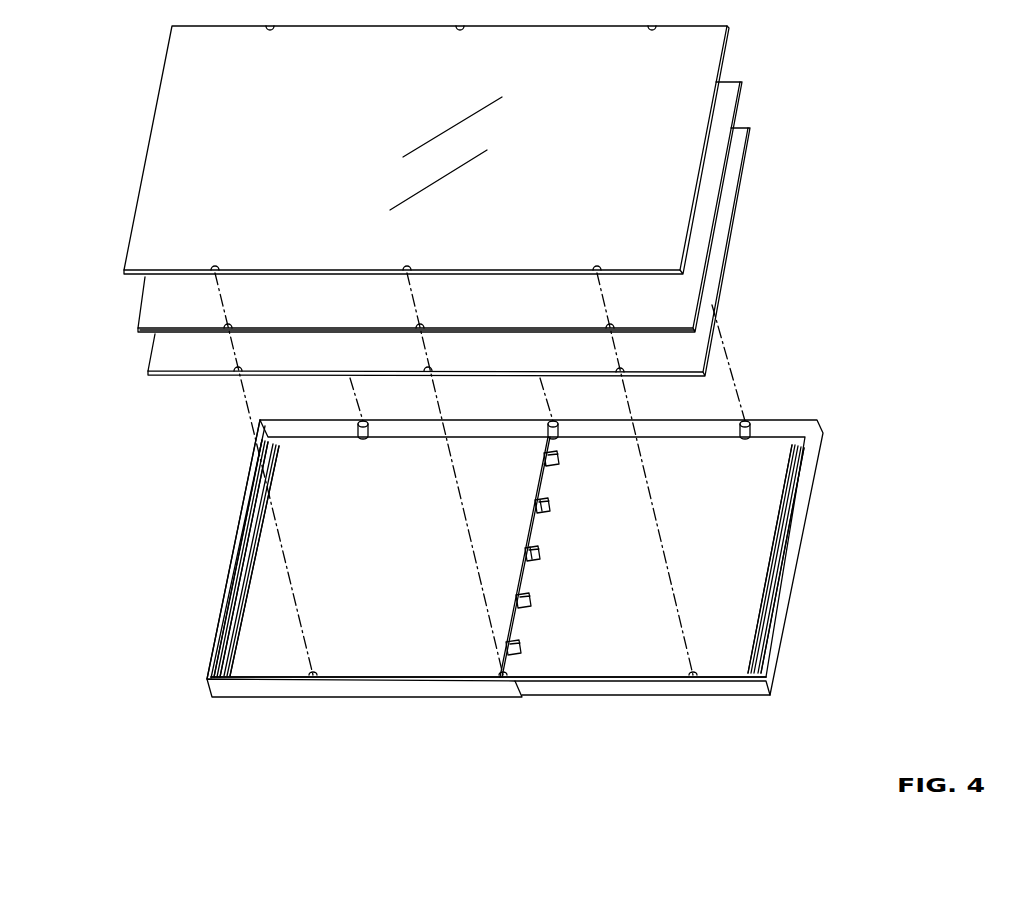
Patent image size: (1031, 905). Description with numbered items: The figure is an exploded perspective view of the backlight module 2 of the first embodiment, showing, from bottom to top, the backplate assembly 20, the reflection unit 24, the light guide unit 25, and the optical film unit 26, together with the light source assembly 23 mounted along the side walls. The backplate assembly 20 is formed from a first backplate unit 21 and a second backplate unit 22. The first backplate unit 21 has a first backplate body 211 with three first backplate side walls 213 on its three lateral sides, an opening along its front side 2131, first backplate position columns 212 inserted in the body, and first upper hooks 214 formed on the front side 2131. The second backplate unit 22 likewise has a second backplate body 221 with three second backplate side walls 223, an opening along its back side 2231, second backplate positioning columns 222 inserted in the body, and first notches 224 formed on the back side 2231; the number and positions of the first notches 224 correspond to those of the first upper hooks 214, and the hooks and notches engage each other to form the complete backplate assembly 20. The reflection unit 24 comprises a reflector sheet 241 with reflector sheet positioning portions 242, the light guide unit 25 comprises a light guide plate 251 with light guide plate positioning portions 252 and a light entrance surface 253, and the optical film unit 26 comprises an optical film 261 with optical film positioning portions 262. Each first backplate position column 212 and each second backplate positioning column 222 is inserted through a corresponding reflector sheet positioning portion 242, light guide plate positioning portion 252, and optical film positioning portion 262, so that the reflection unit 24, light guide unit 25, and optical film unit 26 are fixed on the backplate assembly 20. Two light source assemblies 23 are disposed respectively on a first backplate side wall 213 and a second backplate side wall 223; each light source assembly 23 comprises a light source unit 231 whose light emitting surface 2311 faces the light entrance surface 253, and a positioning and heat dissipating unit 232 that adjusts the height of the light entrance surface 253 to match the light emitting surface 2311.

The backlight module 2 is at (824, 744).
The backplate assembly 20 is at (515, 589).
The first backplate unit 21 is at (383, 578).
The first backplate body 211 is at (425, 663).
The first backplate position columns 212 is at (366, 421).
The first backplate side walls 213 is at (453, 683).
The front side of the first backplate body 2131 is at (479, 526).
The first upper hooks 214 is at (536, 548).
The second backplate unit 22 is at (641, 572).
The second backplate body 221 is at (650, 663).
The second backplate positioning columns 222 is at (556, 421).
The second backplate side walls 223 is at (737, 685).
The back side of the second backplate body 2231 is at (574, 520).
The first notches 224 is at (522, 562).
The light source assembly 23 is at (509, 558).
The light source unit 231 is at (238, 575).
The light emitting surface 2311 is at (240, 588).
The positioning and heat dissipating unit 232 is at (250, 612).
The reflection unit 24 is at (489, 252).
The reflector sheet 241 is at (680, 345).
The reflector sheet positioning portions 242 is at (617, 370).
The light guide unit 25 is at (448, 218).
The light guide plate 251 is at (675, 290).
The light guide plate positioning portions 252 is at (618, 318).
The light entrance surface 253 is at (697, 315).
The optical film unit 26 is at (474, 150).
The optical film 261 is at (632, 232).
The optical film positioning portions 262 is at (603, 270).